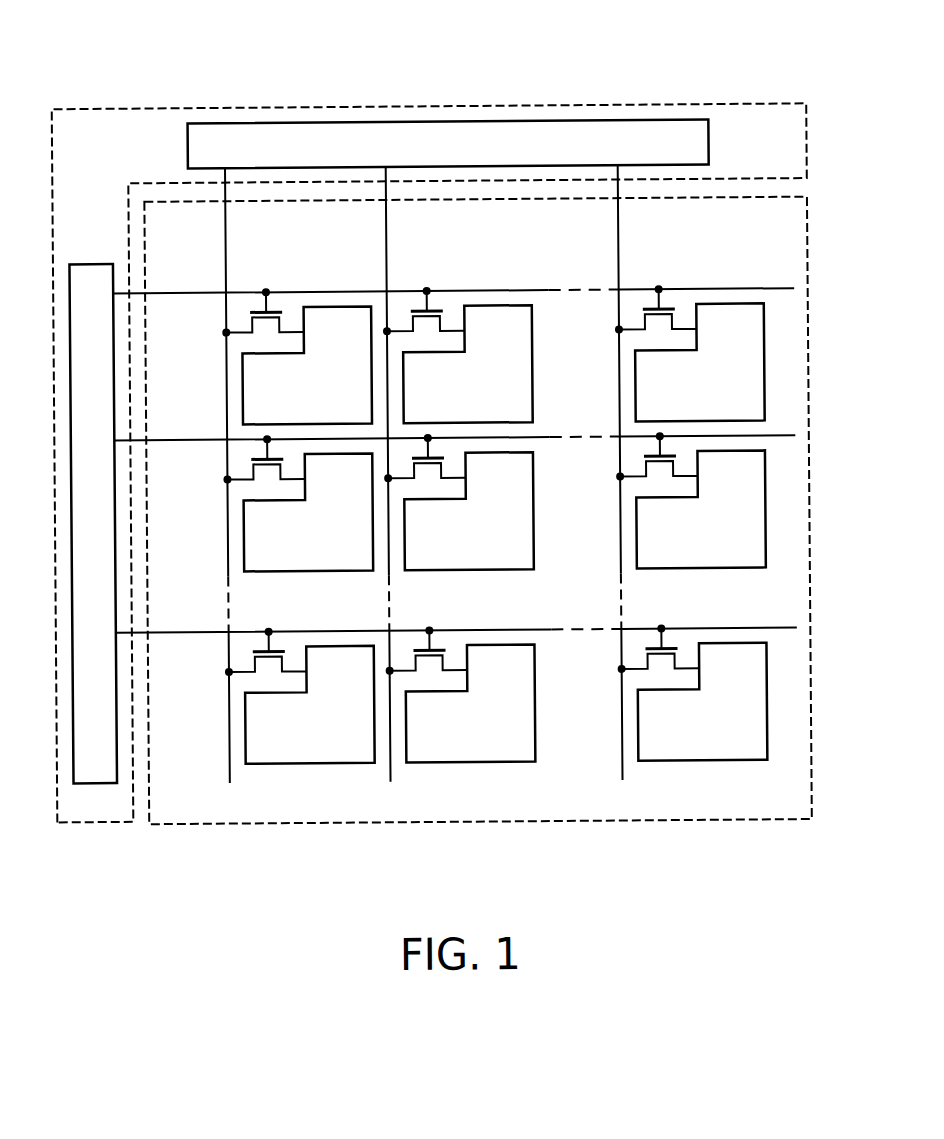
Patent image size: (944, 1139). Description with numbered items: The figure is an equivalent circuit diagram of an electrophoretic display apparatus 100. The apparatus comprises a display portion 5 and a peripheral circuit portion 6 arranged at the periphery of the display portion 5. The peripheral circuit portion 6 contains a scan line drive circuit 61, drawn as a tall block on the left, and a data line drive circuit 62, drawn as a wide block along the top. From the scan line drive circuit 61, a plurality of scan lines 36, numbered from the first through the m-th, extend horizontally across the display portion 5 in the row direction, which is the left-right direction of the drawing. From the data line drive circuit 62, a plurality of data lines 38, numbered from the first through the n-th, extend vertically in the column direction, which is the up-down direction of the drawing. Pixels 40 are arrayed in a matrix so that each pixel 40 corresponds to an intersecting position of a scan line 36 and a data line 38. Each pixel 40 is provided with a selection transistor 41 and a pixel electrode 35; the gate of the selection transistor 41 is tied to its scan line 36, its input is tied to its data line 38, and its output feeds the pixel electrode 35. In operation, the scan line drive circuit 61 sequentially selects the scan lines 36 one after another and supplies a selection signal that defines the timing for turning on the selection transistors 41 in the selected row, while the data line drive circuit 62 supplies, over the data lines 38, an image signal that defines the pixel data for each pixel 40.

The electrophoretic display apparatus 100 is at (448, 414).
The peripheral circuit portion 6 is at (568, 105).
The display portion 5 is at (812, 496).
The data line drive circuit 62 is at (190, 146).
The scan line drive circuit 61 is at (94, 265).
The data line 38 is at (228, 268).
The scan line 36 is at (218, 295).
The pixel 40 is at (469, 491).
The pixel electrode 35 is at (321, 311).
The selection transistor 41 is at (245, 340).